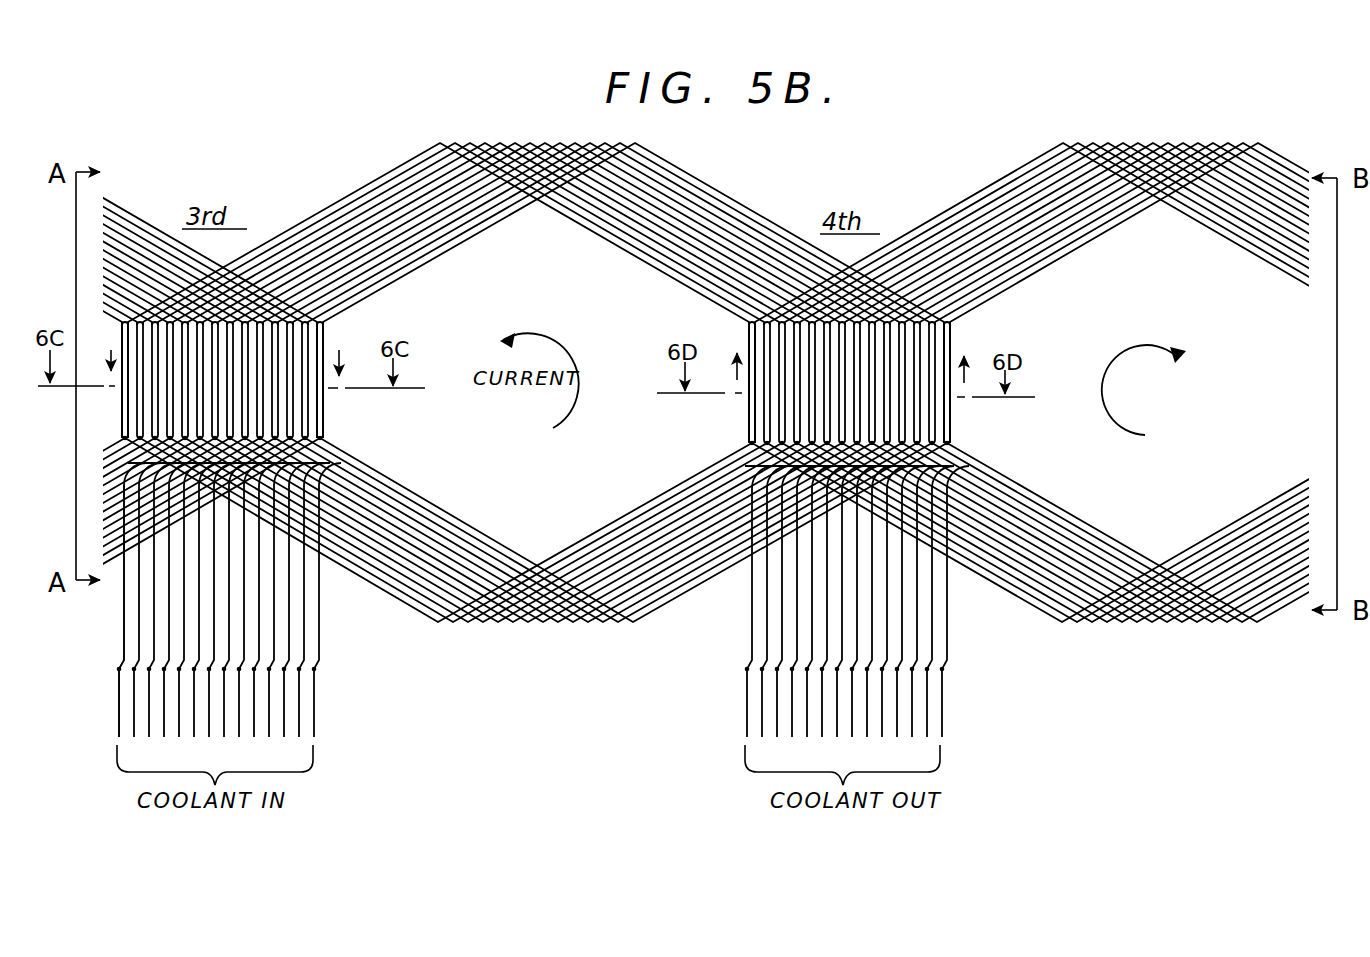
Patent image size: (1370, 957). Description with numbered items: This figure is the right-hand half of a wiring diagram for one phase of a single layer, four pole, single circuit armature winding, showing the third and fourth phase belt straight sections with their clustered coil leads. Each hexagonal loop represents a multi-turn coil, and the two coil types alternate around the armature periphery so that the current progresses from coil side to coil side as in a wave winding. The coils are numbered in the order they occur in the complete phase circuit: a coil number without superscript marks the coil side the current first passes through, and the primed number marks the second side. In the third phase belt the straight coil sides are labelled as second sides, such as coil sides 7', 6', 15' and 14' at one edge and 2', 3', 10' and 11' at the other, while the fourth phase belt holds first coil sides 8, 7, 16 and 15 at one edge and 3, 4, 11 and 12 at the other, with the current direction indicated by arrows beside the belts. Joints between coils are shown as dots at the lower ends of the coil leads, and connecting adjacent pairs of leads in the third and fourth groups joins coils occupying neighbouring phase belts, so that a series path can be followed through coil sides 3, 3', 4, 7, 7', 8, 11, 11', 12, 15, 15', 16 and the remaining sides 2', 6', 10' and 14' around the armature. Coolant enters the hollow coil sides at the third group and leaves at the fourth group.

The second coil side of coil two 2' is at (342, 374).
The second coil side of coil three 3' is at (341, 380).
The second coil side of coil six 6' is at (110, 380).
The second coil side of coil seven 7' is at (110, 376).
The second coil side of coil ten 10' is at (345, 380).
The second coil side of coil eleven 11' is at (345, 381).
The second coil side of coil fourteen 14' is at (160, 547).
The second coil side of coil fifteen 15' is at (106, 380).
The first coil side of coil three 3 is at (967, 378).
The first coil side of coil four 4 is at (953, 345).
The first coil side of coil seven 7 is at (733, 382).
The first coil side of coil eight 8 is at (748, 325).
The first coil side of coil eleven 11 is at (966, 382).
The first coil side of coil twelve 12 is at (952, 432).
The first coil side of coil fifteen 15 is at (728, 385).
The first coil side of coil sixteen 16 is at (749, 410).